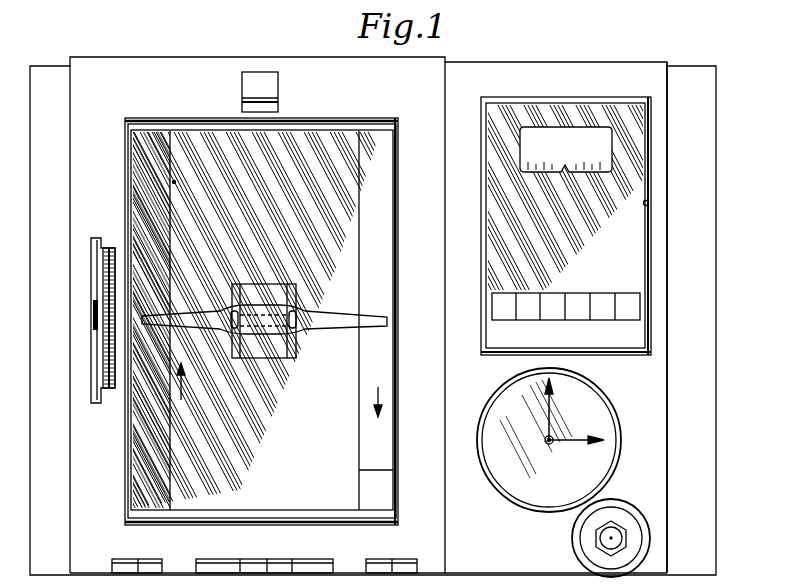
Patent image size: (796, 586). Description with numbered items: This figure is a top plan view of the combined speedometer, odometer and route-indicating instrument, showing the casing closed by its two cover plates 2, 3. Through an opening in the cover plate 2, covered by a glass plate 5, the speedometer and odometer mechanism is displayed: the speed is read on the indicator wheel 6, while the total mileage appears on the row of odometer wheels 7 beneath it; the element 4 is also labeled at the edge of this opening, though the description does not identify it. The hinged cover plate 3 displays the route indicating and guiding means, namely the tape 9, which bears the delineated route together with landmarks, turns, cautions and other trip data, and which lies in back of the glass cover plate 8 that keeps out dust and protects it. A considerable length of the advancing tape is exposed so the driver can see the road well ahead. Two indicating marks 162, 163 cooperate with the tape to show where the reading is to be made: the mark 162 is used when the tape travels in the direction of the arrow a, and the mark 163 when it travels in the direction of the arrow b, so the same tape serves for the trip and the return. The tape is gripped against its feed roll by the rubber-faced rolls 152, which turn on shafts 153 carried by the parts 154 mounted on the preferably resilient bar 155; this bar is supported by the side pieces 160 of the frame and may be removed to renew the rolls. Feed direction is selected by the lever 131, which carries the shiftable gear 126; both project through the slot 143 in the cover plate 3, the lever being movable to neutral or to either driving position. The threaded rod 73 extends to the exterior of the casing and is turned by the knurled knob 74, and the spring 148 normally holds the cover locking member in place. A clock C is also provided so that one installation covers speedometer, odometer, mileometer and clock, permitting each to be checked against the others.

The cover plate 2 is at (667, 447).
The cover plate 3 is at (128, 456).
The register window frame 4 is at (650, 203).
The glass plate 5 is at (633, 256).
The indicator wheel 6 is at (587, 133).
The odometer wheels 7 is at (563, 297).
The glass cover plate 8 is at (285, 583).
The tape 9 is at (353, 148).
The threaded rod 73 is at (614, 535).
The knurled knob 74 is at (645, 529).
The gear 126 is at (103, 357).
The lever 131 is at (93, 318).
The slot 143 is at (97, 395).
The spring 148 is at (276, 108).
The rolls 152 is at (272, 348).
The shafts 153 is at (266, 293).
The parts 154 is at (299, 330).
The bar 155 is at (207, 303).
The side pieces 160 is at (376, 435).
The indicating mark 162 is at (168, 182).
The indicating mark 163 is at (366, 470).
The arrow a is at (183, 380).
The arrow b is at (380, 396).
The clock C is at (583, 427).